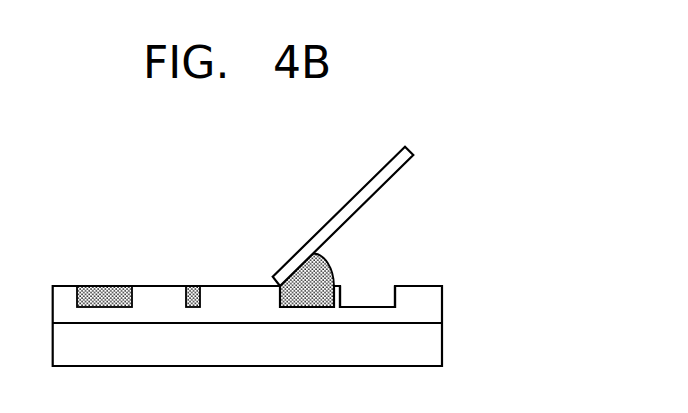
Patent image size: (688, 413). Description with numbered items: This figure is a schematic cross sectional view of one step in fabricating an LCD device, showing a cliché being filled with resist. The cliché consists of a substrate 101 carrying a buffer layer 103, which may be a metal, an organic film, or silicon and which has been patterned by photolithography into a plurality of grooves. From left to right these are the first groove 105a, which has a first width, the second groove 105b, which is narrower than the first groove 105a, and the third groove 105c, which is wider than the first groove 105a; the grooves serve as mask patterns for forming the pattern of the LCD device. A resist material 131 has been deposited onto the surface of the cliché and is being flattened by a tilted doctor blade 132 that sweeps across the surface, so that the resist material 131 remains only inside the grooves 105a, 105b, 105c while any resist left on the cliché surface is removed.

The substrate 101 is at (442, 354).
The buffer layer 103 is at (442, 316).
The first groove 105a is at (103, 286).
The second groove 105b is at (195, 286).
The third groove 105c is at (369, 293).
The resist material 131 is at (332, 265).
The doctor blade 132 is at (360, 191).